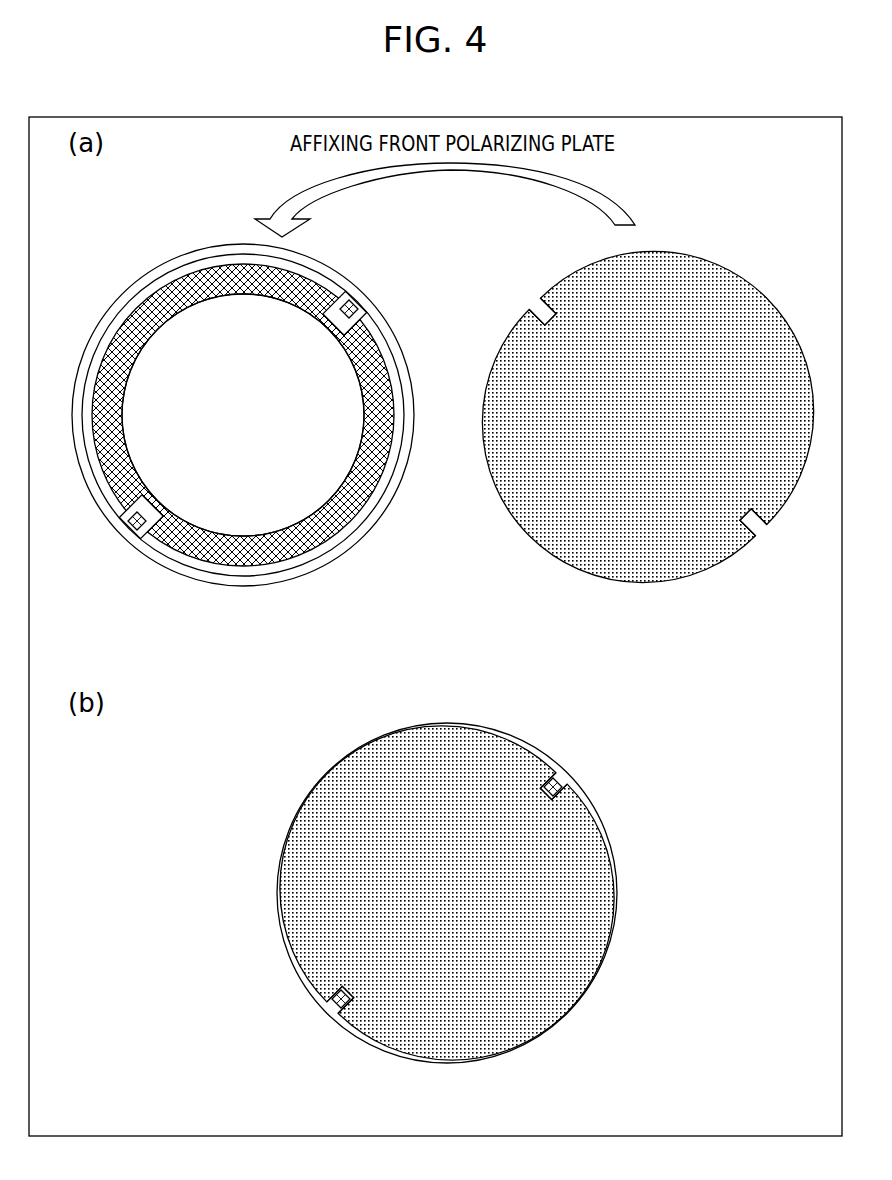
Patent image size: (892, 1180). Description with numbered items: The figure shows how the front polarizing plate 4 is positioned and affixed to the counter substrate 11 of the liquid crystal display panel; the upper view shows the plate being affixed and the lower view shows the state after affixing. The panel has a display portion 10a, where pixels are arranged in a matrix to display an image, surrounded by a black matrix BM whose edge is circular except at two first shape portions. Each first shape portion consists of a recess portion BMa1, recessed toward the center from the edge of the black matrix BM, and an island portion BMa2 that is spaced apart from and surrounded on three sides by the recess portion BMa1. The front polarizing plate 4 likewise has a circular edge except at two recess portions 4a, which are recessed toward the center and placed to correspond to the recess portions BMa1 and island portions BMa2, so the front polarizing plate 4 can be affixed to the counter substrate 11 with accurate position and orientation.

The front polarizing plate 4 is at (497, 445).
The recess portion 4a is at (535, 307).
The display portion 10a is at (332, 414).
The counter substrate 11 is at (305, 262).
The black matrix BM is at (305, 553).
The recess portion BMa1 is at (135, 528).
The island portion BMa2 is at (128, 524).